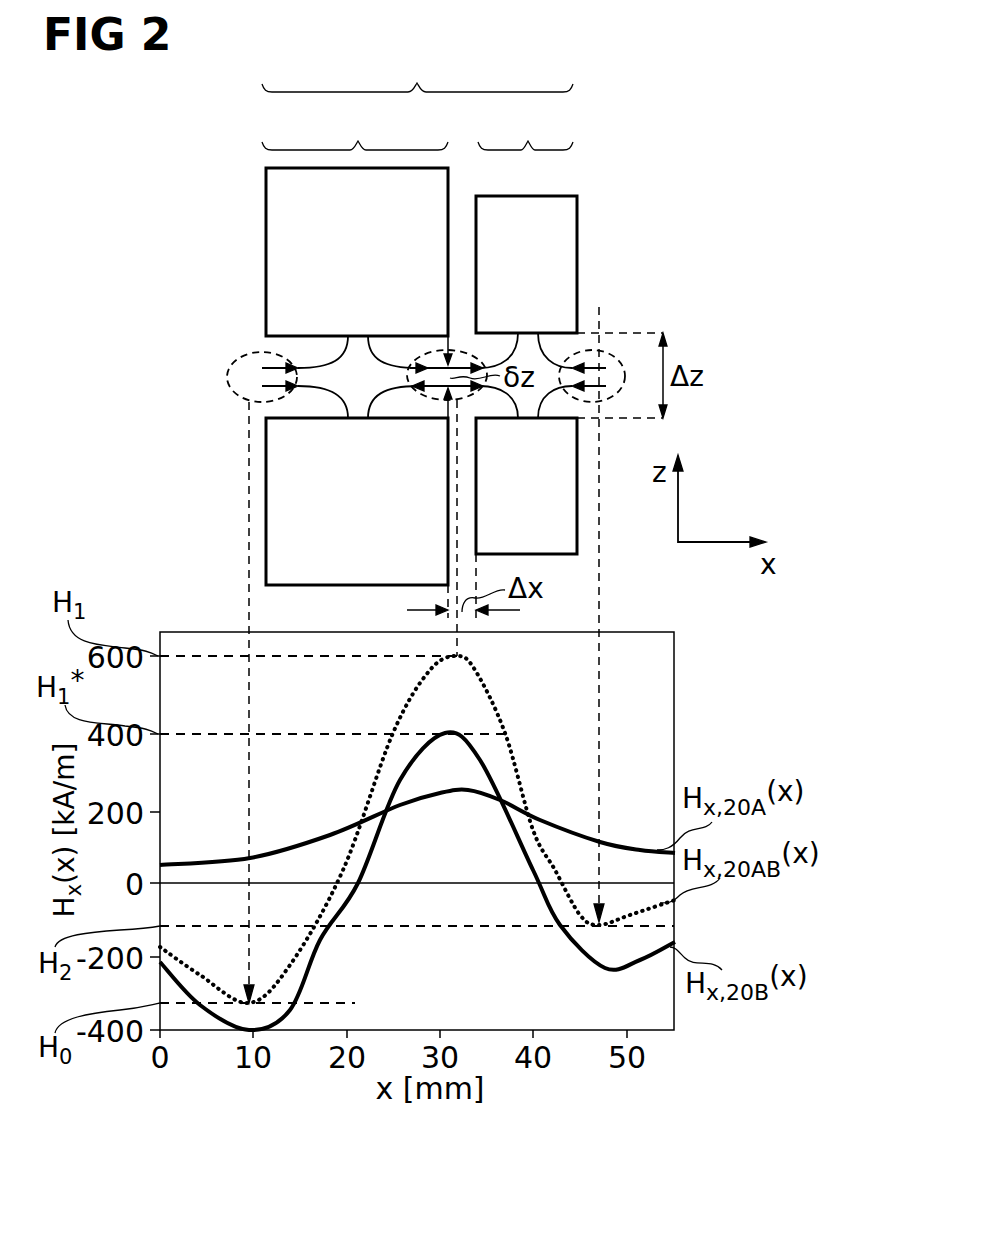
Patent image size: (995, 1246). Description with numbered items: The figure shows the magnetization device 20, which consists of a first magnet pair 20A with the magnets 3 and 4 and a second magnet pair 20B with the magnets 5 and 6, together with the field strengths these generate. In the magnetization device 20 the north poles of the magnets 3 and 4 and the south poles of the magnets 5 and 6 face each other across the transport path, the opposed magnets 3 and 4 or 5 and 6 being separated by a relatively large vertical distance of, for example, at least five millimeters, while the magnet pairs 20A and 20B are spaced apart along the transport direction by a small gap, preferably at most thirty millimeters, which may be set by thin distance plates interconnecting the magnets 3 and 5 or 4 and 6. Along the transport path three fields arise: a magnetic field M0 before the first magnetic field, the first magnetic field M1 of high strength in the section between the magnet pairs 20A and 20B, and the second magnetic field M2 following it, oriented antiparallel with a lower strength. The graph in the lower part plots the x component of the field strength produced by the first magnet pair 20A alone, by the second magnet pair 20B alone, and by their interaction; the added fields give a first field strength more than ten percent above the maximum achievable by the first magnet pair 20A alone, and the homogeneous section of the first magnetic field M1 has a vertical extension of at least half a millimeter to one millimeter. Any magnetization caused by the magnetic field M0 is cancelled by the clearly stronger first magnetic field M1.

The magnet 3 is at (266, 228).
The magnet 4 is at (266, 512).
The magnet 5 is at (577, 235).
The magnet 6 is at (577, 485).
The magnetization device 20 is at (417, 70).
The first magnet pair 20A is at (355, 126).
The second magnet pair 20B is at (525, 126).
The magnetic field M0 is at (258, 352).
The first magnetic field M1 is at (436, 352).
The second magnetic field M2 is at (598, 350).